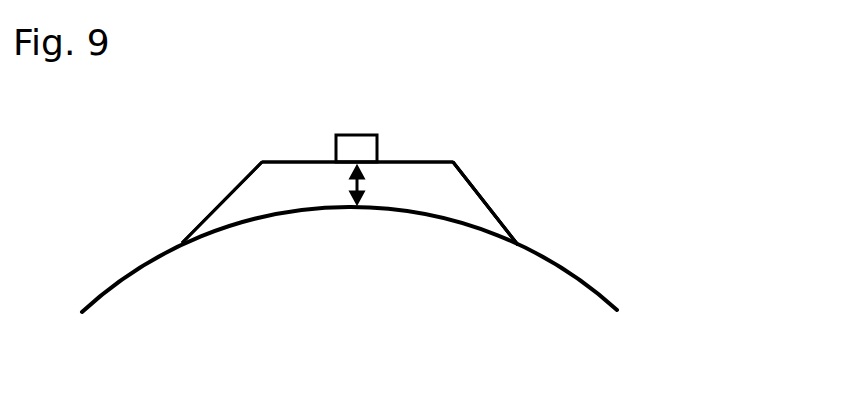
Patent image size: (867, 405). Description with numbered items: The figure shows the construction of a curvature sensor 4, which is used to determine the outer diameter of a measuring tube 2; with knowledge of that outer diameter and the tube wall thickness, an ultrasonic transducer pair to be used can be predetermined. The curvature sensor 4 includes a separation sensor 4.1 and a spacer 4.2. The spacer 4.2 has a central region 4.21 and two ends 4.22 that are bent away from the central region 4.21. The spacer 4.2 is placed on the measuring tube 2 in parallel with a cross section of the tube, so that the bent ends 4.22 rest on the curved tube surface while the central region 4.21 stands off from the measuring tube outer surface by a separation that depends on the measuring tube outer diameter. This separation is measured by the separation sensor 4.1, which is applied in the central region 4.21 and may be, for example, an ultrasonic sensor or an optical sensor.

The measuring tube 2 is at (594, 283).
The curvature sensor 4 is at (477, 137).
The separation sensor 4.1 is at (363, 122).
The spacer 4.2 is at (475, 173).
The central region 4.21 is at (292, 162).
The ends 4.22 is at (207, 216).